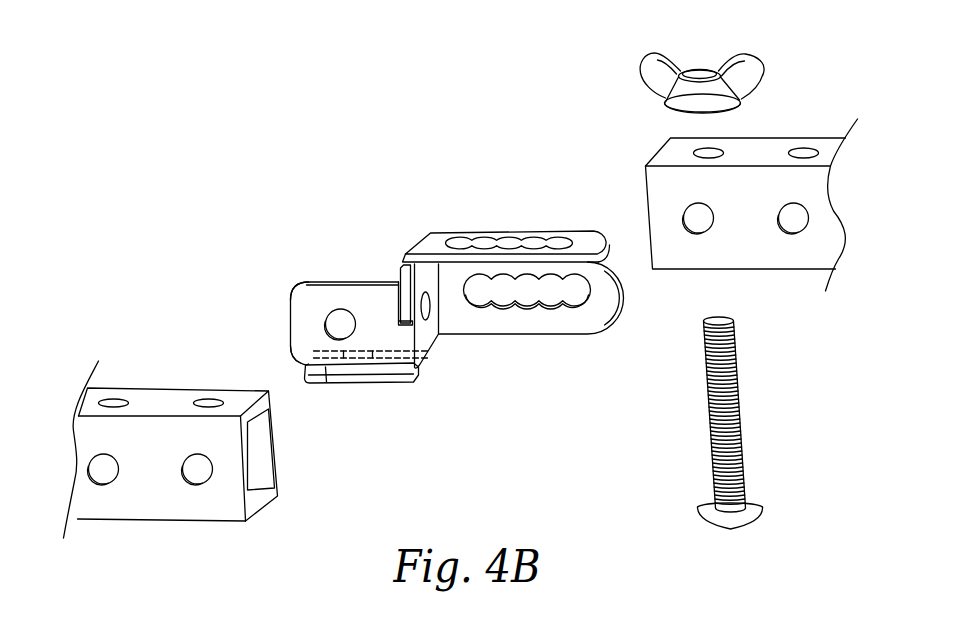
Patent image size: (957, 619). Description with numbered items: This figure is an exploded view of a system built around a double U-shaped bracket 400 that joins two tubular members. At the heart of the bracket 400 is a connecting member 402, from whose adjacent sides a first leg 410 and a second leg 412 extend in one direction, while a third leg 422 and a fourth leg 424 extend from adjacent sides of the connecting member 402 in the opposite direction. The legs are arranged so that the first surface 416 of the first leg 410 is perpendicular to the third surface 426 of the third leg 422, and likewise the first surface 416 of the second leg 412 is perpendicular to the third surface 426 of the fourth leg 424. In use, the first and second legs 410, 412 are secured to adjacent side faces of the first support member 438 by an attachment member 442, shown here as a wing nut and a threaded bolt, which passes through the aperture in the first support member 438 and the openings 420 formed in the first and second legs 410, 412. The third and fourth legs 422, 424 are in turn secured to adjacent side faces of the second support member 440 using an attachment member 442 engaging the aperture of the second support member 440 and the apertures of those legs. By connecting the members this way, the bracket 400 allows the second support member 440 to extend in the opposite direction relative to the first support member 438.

The double U-shaped bracket 400 is at (412, 211).
The connecting member 402 is at (428, 336).
The first leg 410 is at (543, 228).
The second leg 412 is at (584, 332).
The first surface 416 is at (602, 326).
The openings 420 is at (517, 304).
The third leg 422 is at (290, 305).
The fourth leg 424 is at (367, 383).
The third surface 426 is at (332, 279).
The first support member 438 is at (748, 269).
The second support member 440 is at (177, 389).
The attachment member 442 is at (741, 53).